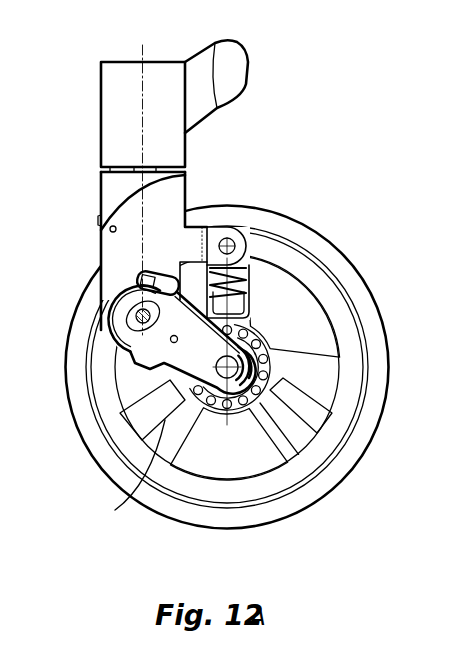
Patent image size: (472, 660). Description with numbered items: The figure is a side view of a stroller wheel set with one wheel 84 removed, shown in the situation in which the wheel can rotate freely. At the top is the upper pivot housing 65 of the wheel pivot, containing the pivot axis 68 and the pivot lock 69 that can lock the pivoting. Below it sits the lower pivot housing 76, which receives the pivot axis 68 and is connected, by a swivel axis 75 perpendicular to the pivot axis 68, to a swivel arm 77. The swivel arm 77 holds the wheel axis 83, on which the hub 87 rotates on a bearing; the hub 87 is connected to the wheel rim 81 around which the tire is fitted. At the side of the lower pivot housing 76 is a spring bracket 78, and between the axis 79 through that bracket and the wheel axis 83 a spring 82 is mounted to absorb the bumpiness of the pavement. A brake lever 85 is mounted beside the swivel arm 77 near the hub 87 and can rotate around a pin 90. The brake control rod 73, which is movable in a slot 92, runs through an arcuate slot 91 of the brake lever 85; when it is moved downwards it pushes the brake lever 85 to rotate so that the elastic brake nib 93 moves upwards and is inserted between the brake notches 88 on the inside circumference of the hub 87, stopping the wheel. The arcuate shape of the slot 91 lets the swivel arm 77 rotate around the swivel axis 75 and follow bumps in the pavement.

The upper pivot housing 65 is at (103, 76).
The pivot axis 68 is at (150, 164).
The pivot lock 69 is at (101, 160).
The lower pivot housing 76 is at (168, 210).
The spring bracket 78 is at (196, 243).
The axis 79 is at (236, 240).
The spring 82 is at (246, 278).
The brake notches 88 is at (352, 262).
The wheel 84 is at (362, 284).
The wheel rim 81 is at (249, 367).
The hub 87 is at (255, 352).
The brake nib 93 is at (285, 382).
The arcuate slot 91 is at (148, 276).
The brake control rod 73 is at (133, 287).
The slot 92 is at (130, 306).
The swivel axis 75 is at (165, 342).
The pin 90 is at (128, 352).
The brake lever 85 is at (136, 364).
The swivel arm 77 is at (126, 471).
The wheel axis 83 is at (229, 396).